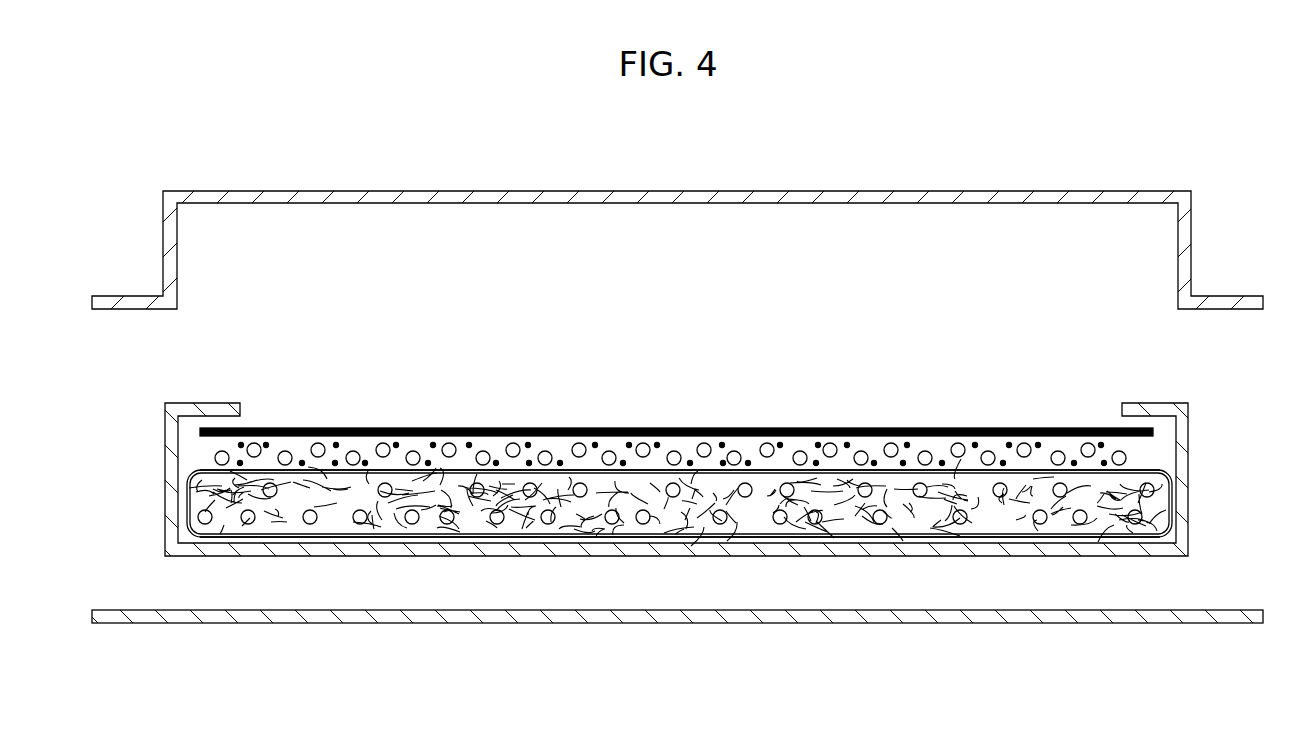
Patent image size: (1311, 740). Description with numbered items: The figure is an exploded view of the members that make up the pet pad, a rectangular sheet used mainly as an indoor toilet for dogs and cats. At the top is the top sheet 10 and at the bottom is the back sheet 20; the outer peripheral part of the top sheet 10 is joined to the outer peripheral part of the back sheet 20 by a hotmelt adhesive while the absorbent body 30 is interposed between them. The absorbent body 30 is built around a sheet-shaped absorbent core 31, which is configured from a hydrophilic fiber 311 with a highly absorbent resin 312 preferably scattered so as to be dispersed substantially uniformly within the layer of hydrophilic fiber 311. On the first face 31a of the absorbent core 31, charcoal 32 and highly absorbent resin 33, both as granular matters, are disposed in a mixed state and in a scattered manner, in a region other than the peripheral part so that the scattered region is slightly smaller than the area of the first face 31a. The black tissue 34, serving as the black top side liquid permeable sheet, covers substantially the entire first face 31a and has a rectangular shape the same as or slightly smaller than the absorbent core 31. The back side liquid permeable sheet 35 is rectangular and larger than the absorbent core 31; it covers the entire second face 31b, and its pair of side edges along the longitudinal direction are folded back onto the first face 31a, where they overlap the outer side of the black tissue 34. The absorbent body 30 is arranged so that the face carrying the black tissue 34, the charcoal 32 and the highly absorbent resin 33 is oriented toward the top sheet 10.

The top sheet 10 is at (214, 191).
The back sheet 20 is at (236, 623).
The absorbent body 30 is at (124, 449).
The absorbent core 31 is at (740, 480).
The hydrophilic fiber 311 is at (1158, 508).
The highly absorbent resin 312 is at (1152, 488).
The first face 31a is at (386, 472).
The second face 31b is at (400, 537).
The charcoal 32 is at (596, 443).
The highly absorbent resin 33 is at (506, 451).
The black tissue 34 is at (284, 428).
The back side liquid permeable sheet 35 is at (221, 403).